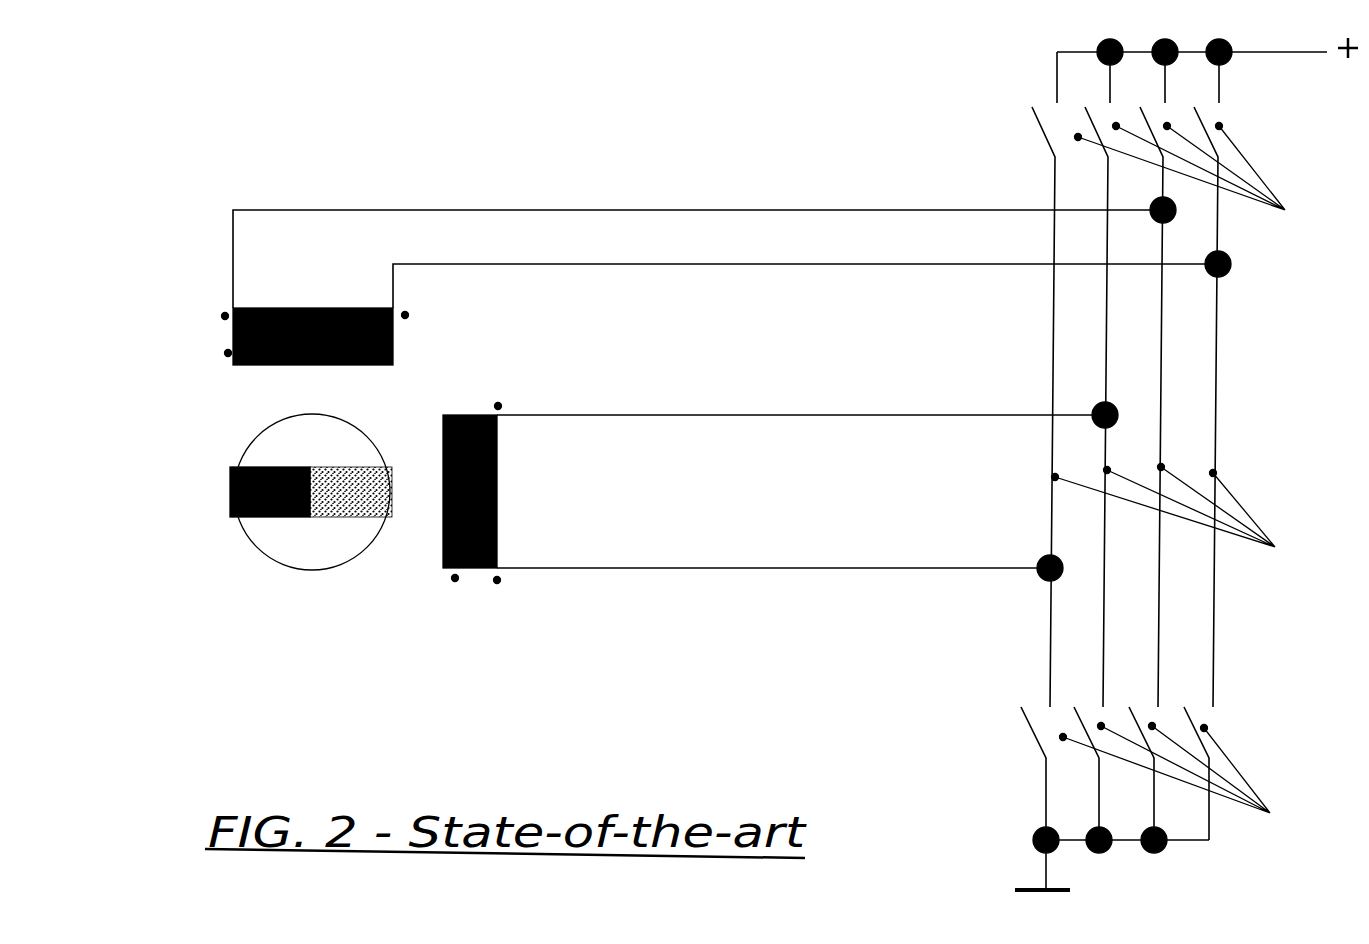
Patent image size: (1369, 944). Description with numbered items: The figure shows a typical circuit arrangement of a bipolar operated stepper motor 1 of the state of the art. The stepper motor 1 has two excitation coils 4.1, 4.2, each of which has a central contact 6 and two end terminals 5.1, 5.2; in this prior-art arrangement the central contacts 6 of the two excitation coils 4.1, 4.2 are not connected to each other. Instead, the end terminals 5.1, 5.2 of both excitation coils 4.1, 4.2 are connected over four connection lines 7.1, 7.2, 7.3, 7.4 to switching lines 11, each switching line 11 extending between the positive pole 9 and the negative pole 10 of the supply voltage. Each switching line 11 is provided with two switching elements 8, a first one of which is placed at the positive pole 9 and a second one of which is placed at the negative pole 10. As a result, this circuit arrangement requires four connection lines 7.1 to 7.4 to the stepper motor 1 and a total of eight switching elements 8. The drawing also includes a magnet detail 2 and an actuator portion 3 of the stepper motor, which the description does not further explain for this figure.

The stepper motor 1 is at (198, 680).
The permanent magnet 2 is at (325, 537).
The actuator 3 is at (237, 402).
The excitation coil 4.1 is at (228, 353).
The excitation coil 4.2 is at (455, 578).
The end terminal 5.1 is at (225, 316).
The end terminal 5.2 is at (405, 315).
The central contact 6 is at (313, 310).
The connection line 7.1 is at (660, 201).
The connection line 7.2 is at (797, 268).
The connection line 7.3 is at (658, 412).
The connection line 7.4 is at (745, 562).
The switching element 8 is at (1194, 482).
The positive pole 9 is at (1207, 69).
The negative pole 10 is at (1112, 866).
The switching line 11 is at (1195, 523).